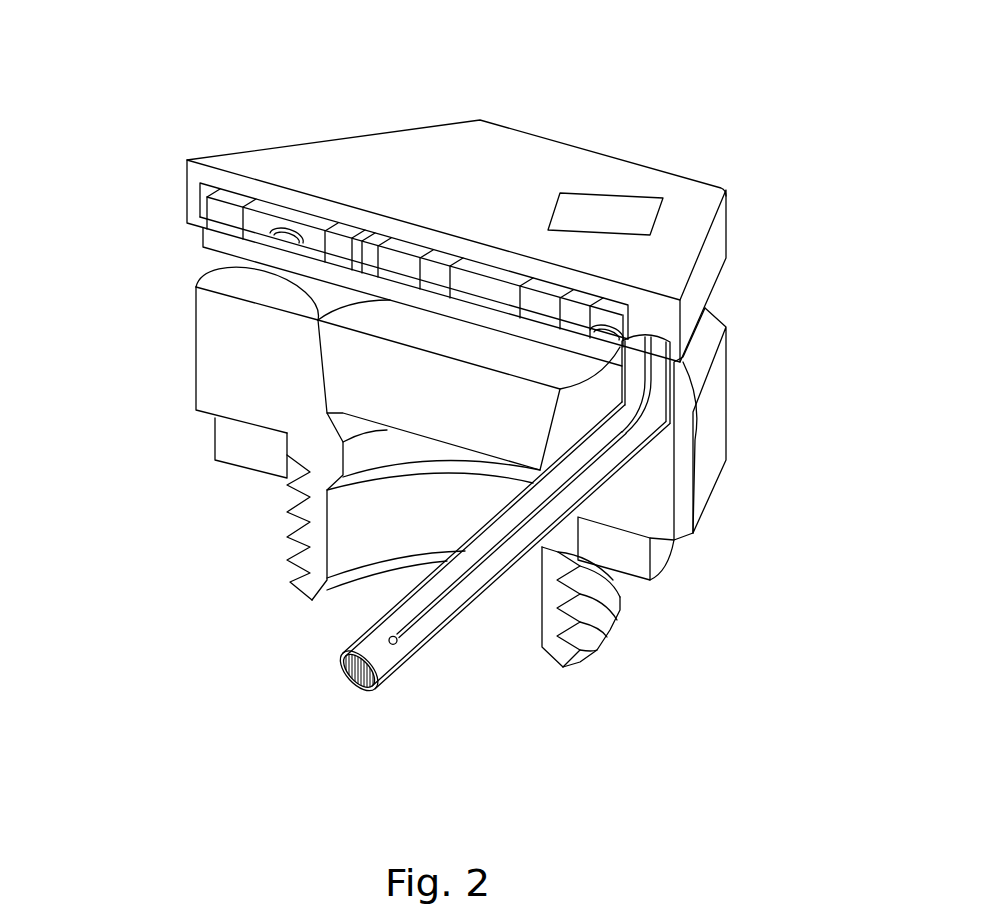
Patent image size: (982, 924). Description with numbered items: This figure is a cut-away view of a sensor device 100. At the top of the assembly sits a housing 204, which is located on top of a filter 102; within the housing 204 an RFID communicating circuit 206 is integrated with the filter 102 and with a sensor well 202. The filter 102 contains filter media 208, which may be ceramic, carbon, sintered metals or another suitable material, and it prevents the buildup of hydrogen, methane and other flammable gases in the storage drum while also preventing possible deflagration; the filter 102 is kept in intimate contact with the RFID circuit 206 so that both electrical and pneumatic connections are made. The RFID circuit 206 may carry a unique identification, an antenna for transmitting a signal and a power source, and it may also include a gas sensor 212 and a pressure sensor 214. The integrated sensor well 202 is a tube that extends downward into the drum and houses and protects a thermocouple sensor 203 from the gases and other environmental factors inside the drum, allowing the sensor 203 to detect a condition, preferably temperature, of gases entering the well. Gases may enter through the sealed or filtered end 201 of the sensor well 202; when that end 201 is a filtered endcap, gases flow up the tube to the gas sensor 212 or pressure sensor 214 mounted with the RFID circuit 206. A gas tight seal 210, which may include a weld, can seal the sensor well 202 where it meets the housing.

The sensor device 100 is at (188, 170).
The filter 102 is at (722, 413).
The sealed or filtered end 201 is at (352, 682).
The sensor well 202 is at (410, 642).
The thermocouple sensor 203 is at (450, 595).
The housing 204 is at (346, 182).
The RFID communicating circuit 206 is at (503, 290).
The filter media 208 is at (318, 380).
The gas tight seal 210 is at (623, 418).
The gas sensor 212 is at (557, 292).
The pressure sensor 214 is at (593, 300).